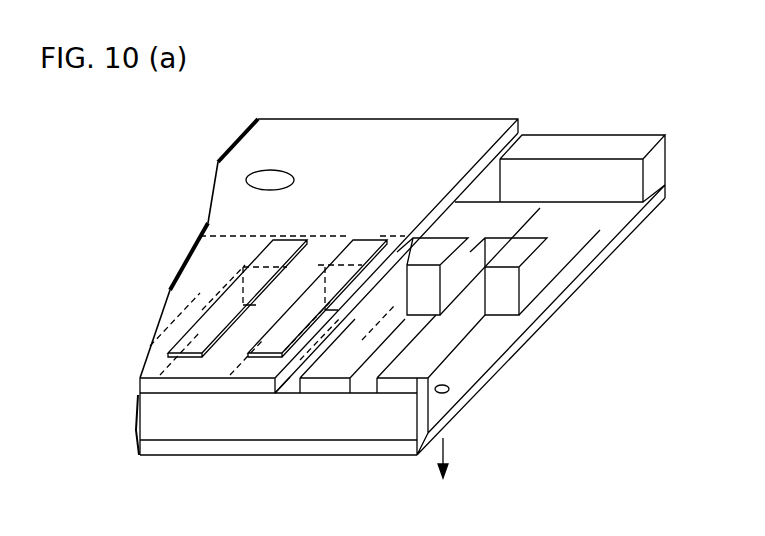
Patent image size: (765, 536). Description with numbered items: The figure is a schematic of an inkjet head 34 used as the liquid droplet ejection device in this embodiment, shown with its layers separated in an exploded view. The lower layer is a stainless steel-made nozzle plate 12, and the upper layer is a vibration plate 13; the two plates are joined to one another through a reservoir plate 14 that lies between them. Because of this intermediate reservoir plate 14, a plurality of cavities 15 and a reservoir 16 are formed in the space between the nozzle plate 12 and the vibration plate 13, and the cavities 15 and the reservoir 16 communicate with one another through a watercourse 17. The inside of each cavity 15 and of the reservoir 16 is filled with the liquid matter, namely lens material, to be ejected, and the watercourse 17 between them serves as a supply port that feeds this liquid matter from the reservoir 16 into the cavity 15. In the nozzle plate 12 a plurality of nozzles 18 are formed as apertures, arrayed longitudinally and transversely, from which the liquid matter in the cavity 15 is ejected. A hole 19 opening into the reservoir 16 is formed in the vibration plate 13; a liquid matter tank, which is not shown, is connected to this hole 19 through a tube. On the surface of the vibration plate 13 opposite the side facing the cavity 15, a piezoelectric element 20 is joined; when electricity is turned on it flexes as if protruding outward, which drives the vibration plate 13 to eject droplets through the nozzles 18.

The nozzle plate 12 is at (597, 258).
The vibration plate 13 is at (285, 378).
The reservoir plate 14 is at (457, 333).
The cavities 15 is at (385, 300).
The reservoir 16 is at (575, 205).
The watercourse 17 is at (450, 262).
The nozzles 18 is at (449, 389).
The hole 19 is at (258, 176).
The piezoelectric element 20 is at (207, 322).
The inkjet head 34 is at (338, 108).